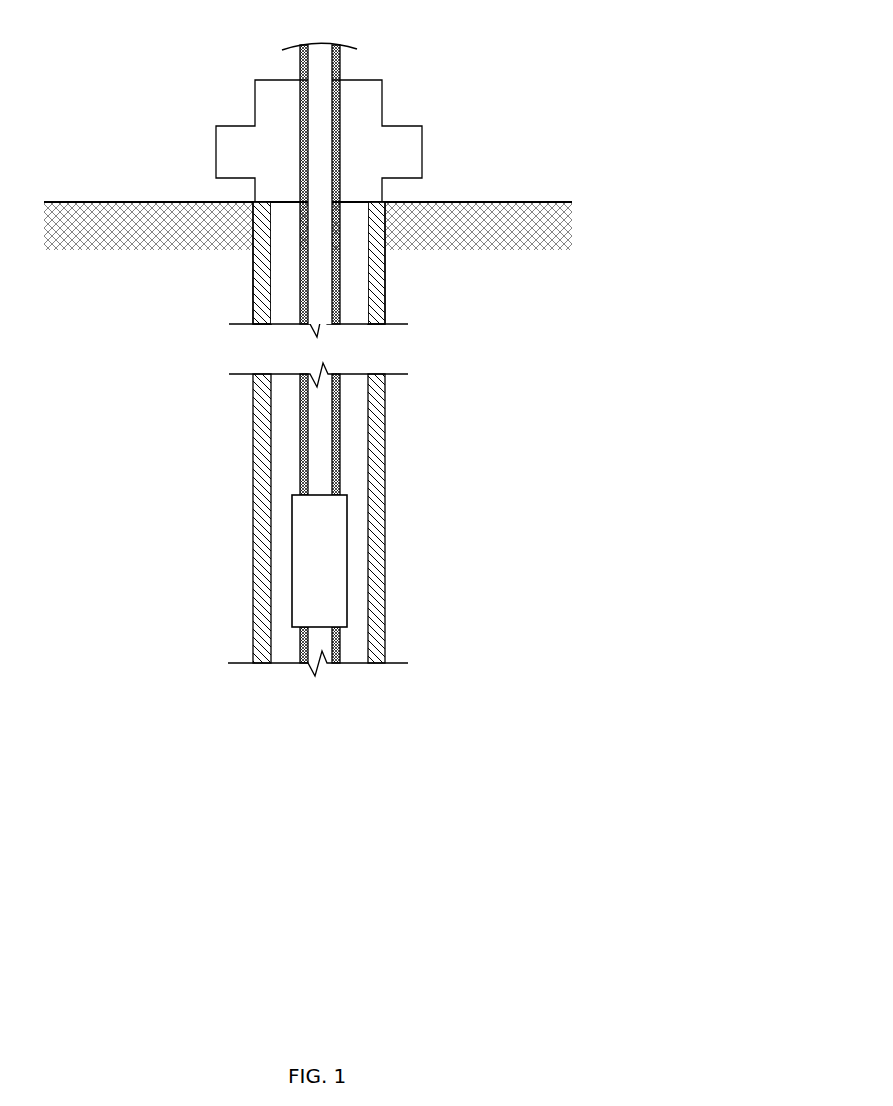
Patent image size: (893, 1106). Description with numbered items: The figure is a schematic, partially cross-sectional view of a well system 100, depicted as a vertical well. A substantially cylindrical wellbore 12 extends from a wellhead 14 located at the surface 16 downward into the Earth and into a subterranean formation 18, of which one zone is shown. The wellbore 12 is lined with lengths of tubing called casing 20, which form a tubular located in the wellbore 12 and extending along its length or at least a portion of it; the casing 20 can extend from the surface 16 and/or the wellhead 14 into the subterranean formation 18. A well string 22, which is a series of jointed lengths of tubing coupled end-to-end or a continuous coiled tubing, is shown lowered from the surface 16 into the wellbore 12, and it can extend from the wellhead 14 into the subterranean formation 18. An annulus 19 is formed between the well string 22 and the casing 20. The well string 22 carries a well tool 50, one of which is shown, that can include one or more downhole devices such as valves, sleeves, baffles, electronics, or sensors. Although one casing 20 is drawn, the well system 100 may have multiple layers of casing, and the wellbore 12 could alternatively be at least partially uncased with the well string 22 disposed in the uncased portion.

The well system 100 is at (128, 48).
The wellbore 12 is at (389, 300).
The wellhead 14 is at (423, 145).
The surface 16 is at (127, 200).
The subterranean formation 18 is at (543, 506).
The annulus 19 is at (282, 428).
The casing 20 is at (386, 457).
The well string 22 is at (300, 478).
The well tool 50 is at (292, 600).